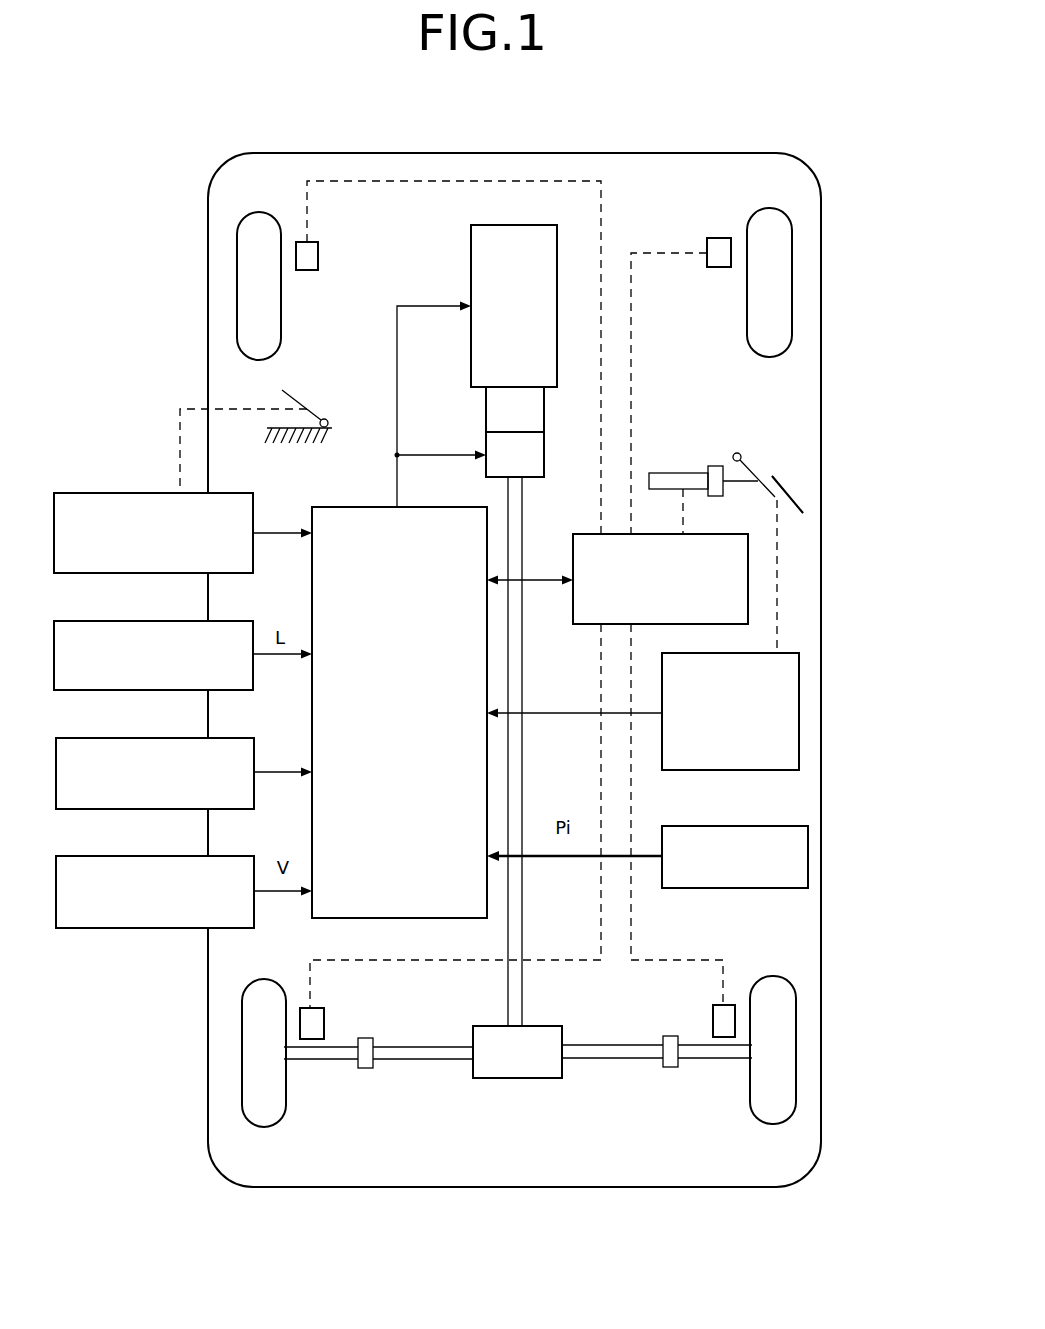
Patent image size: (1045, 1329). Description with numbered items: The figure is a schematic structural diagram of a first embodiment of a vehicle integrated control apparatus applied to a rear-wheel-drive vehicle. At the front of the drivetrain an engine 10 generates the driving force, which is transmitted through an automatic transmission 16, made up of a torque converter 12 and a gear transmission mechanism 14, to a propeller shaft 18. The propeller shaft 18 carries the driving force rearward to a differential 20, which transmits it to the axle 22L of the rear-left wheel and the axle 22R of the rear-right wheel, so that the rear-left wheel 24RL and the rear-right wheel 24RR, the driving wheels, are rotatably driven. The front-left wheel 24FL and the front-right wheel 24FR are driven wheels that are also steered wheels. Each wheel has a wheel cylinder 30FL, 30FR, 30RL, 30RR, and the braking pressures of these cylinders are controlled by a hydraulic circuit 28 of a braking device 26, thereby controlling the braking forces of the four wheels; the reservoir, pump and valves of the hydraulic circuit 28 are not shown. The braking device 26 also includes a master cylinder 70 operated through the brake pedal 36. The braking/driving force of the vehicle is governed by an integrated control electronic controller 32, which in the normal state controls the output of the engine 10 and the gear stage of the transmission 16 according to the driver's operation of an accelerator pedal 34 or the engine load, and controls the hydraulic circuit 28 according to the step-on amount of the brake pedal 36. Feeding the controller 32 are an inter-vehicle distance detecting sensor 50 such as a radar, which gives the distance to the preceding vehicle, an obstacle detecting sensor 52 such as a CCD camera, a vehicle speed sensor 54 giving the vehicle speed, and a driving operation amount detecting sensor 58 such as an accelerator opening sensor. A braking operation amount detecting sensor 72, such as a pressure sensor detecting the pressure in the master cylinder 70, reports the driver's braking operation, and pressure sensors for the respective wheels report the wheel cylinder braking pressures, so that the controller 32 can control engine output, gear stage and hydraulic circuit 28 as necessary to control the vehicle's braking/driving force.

The engine 10 is at (503, 301).
The torque converter 12 is at (504, 422).
The gear transmission mechanism 14 is at (504, 465).
The automatic transmission 16 is at (478, 426).
The propeller shaft 18 is at (508, 995).
The differential 20 is at (515, 1078).
The axle of rear-left wheel 22L is at (420, 1059).
The axle of rear-right wheel 22R is at (640, 1058).
The front-left wheel 24FL is at (237, 290).
The front-right wheel 24FR is at (792, 283).
The rear-left wheel 24RL is at (242, 1047).
The rear-right wheel 24RR is at (796, 1035).
The braking device 26 is at (709, 428).
The hydraulic circuit 28 is at (649, 616).
The wheel cylinder 30FL is at (318, 255).
The wheel cylinder 30FR is at (719, 238).
The wheel cylinder 30RL is at (324, 1026).
The wheel cylinder 30RR is at (713, 1026).
The integrated control electronic controller 32 is at (388, 784).
The accelerator pedal 34 is at (295, 398).
The brake pedal 36 is at (786, 487).
The inter-vehicle distance detecting sensor 50 is at (178, 621).
The obstacle detecting sensor 52 is at (168, 738).
The vehicle speed sensor 54 is at (175, 856).
The driving operation amount detecting sensor 58 is at (145, 493).
The master cylinder 70 is at (679, 473).
The braking operation amount detecting sensor 72 is at (799, 711).